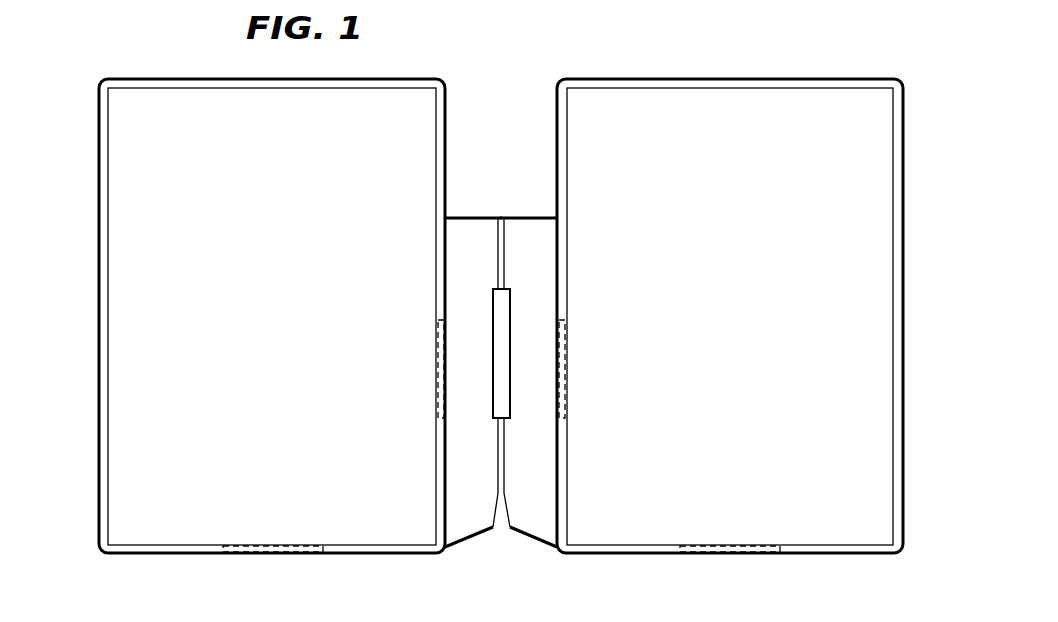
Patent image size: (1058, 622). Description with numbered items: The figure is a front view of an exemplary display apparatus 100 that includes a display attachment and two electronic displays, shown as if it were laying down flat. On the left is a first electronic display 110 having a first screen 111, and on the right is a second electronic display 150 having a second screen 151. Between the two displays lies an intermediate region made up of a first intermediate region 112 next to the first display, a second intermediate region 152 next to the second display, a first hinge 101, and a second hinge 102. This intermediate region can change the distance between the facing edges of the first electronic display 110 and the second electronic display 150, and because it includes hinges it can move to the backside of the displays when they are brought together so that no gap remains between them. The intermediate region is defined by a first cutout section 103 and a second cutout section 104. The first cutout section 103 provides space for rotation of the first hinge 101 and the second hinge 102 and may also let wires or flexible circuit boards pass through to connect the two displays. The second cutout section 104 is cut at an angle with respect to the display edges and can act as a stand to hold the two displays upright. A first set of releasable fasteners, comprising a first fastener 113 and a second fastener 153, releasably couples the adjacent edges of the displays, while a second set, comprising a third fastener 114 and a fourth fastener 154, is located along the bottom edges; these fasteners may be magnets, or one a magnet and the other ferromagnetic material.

The display apparatus 100 is at (856, 57).
The first hinge 101 is at (498, 282).
The second hinge 102 is at (498, 442).
The first cutout section 103 is at (506, 302).
The second cutout section 104 is at (503, 530).
The first electronic display 110 is at (133, 78).
The first screen 111 is at (104, 118).
The first intermediate region 112 is at (471, 238).
The first fastener 113 is at (441, 352).
The third fastener 114 is at (277, 548).
The second electronic display 150 is at (657, 78).
The second screen 151 is at (898, 118).
The second intermediate region 152 is at (532, 238).
The second fastener 153 is at (562, 352).
The fourth fastener 154 is at (735, 548).